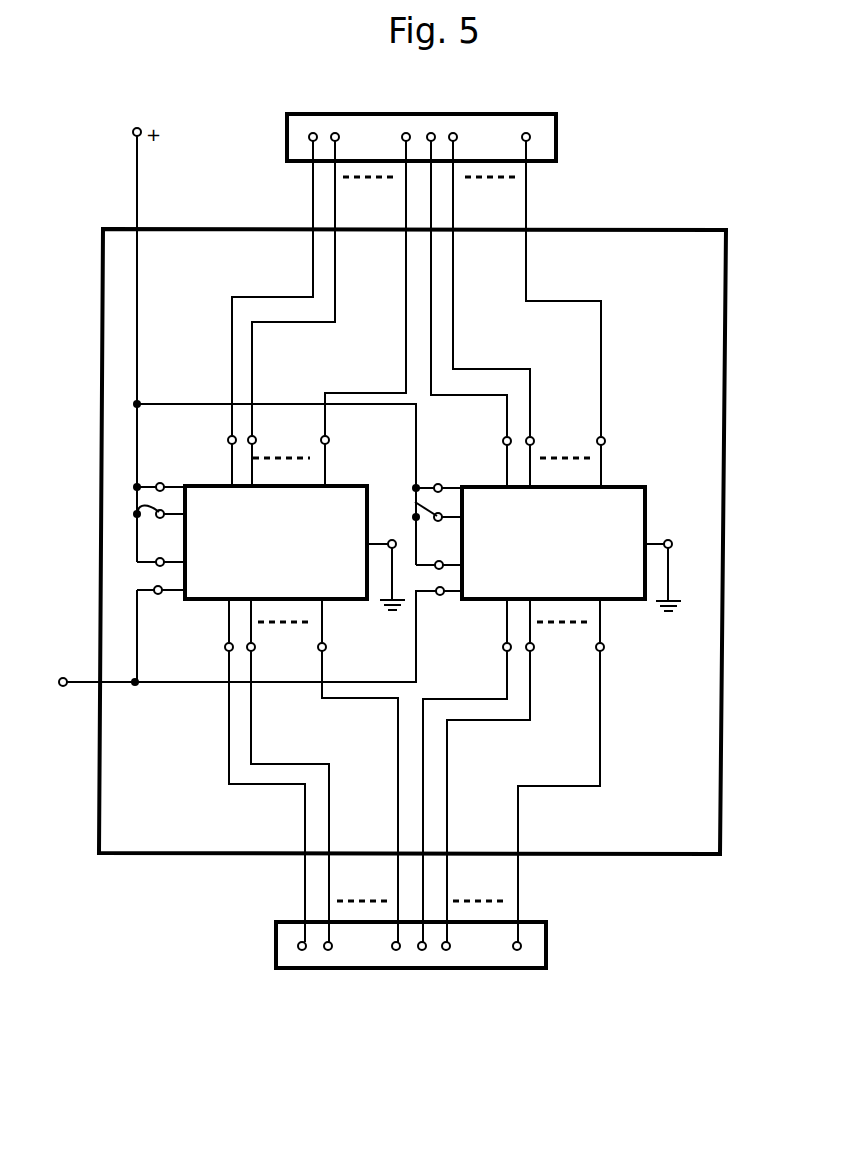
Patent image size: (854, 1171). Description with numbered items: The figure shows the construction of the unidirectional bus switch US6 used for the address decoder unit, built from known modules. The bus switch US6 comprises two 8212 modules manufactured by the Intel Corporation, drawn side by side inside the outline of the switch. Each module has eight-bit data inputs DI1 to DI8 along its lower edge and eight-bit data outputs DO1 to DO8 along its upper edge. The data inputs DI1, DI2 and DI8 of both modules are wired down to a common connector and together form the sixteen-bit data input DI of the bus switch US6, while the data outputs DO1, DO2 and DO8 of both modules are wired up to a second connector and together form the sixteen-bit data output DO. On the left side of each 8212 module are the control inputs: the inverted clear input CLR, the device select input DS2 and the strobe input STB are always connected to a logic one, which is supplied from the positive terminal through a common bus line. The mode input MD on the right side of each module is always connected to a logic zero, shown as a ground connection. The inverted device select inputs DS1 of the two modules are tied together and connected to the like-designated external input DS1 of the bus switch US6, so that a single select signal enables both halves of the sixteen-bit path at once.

The unidirectional bus switch US6 is at (663, 229).
The data output DO is at (514, 113).
The data input DI is at (515, 968).
The 8212 module 8212 is at (415, 542).
The CLR input CLR is at (178, 450).
The DS2 input DS2 is at (283, 507).
The STB input STB is at (299, 552).
The DS1 input DS1 is at (175, 600).
The MD input MD is at (524, 565).
The data output DO1 is at (353, 314).
The data output DO2 is at (419, 314).
The data output DO8 is at (480, 314).
The data input DI1 is at (353, 770).
The data input DI2 is at (417, 770).
The data input DI8 is at (479, 770).